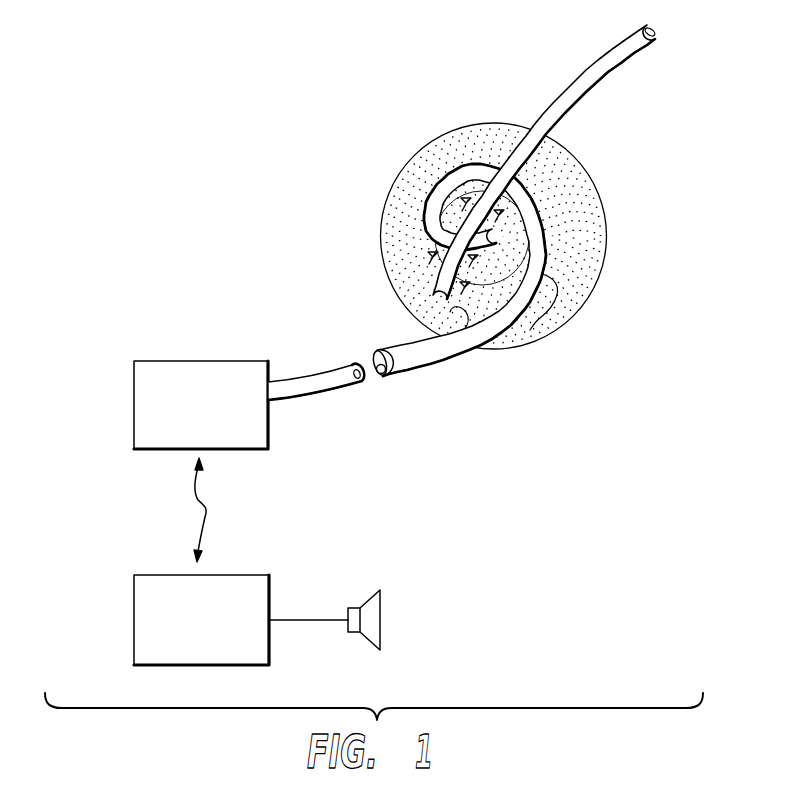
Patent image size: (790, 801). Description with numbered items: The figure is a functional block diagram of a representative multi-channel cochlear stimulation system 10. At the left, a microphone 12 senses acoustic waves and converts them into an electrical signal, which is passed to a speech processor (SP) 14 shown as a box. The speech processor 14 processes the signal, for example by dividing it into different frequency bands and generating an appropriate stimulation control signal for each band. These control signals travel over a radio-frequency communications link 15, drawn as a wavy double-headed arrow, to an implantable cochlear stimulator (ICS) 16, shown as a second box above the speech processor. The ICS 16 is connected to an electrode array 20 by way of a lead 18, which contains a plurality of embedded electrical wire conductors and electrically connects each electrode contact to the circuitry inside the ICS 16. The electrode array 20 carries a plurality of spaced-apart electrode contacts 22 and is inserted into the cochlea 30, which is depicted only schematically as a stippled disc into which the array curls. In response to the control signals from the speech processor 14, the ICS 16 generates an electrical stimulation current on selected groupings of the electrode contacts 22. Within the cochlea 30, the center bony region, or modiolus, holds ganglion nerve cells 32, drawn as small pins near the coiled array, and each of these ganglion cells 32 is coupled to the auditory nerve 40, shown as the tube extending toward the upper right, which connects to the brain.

The cochlear stimulation system 10 is at (205, 166).
The microphone 12 is at (380, 613).
The speech processor 14 is at (134, 608).
The radio-frequency communications link 15 is at (208, 507).
The implantable cochlear stimulator 16 is at (134, 405).
The lead 18 is at (337, 390).
The electrode array 20 is at (543, 303).
The electrode contacts 22 is at (472, 185).
The cochlea 30 is at (605, 218).
The ganglion nerve cells 32 is at (462, 203).
The auditory nerve 40 is at (617, 72).